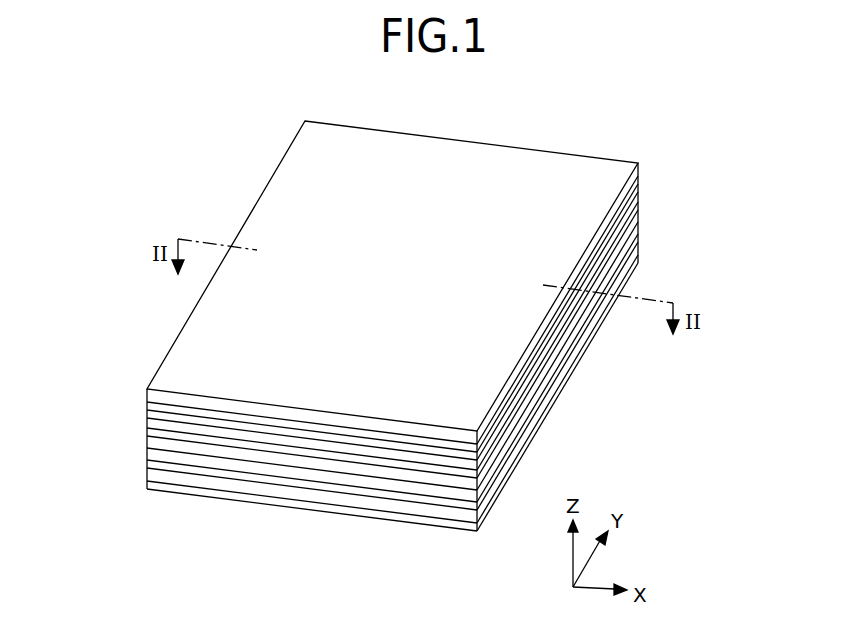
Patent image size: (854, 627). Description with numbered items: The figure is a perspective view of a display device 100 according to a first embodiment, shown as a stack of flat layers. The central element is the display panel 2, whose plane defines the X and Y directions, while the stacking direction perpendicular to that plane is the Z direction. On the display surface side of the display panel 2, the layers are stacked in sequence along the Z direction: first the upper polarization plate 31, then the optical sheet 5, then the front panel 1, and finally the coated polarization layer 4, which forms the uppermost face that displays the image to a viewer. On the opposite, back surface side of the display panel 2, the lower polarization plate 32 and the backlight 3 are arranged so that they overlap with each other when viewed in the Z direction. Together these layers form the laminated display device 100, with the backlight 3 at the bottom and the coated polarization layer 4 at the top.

The display device 100 is at (630, 127).
The coated polarization layer 4 is at (536, 161).
The front panel 1 is at (640, 179).
The display panel 2 is at (640, 216).
The backlight 3 is at (640, 256).
The optical sheet 5 is at (146, 423).
The upper polarization plate 31 is at (146, 448).
The lower polarization plate 32 is at (146, 461).